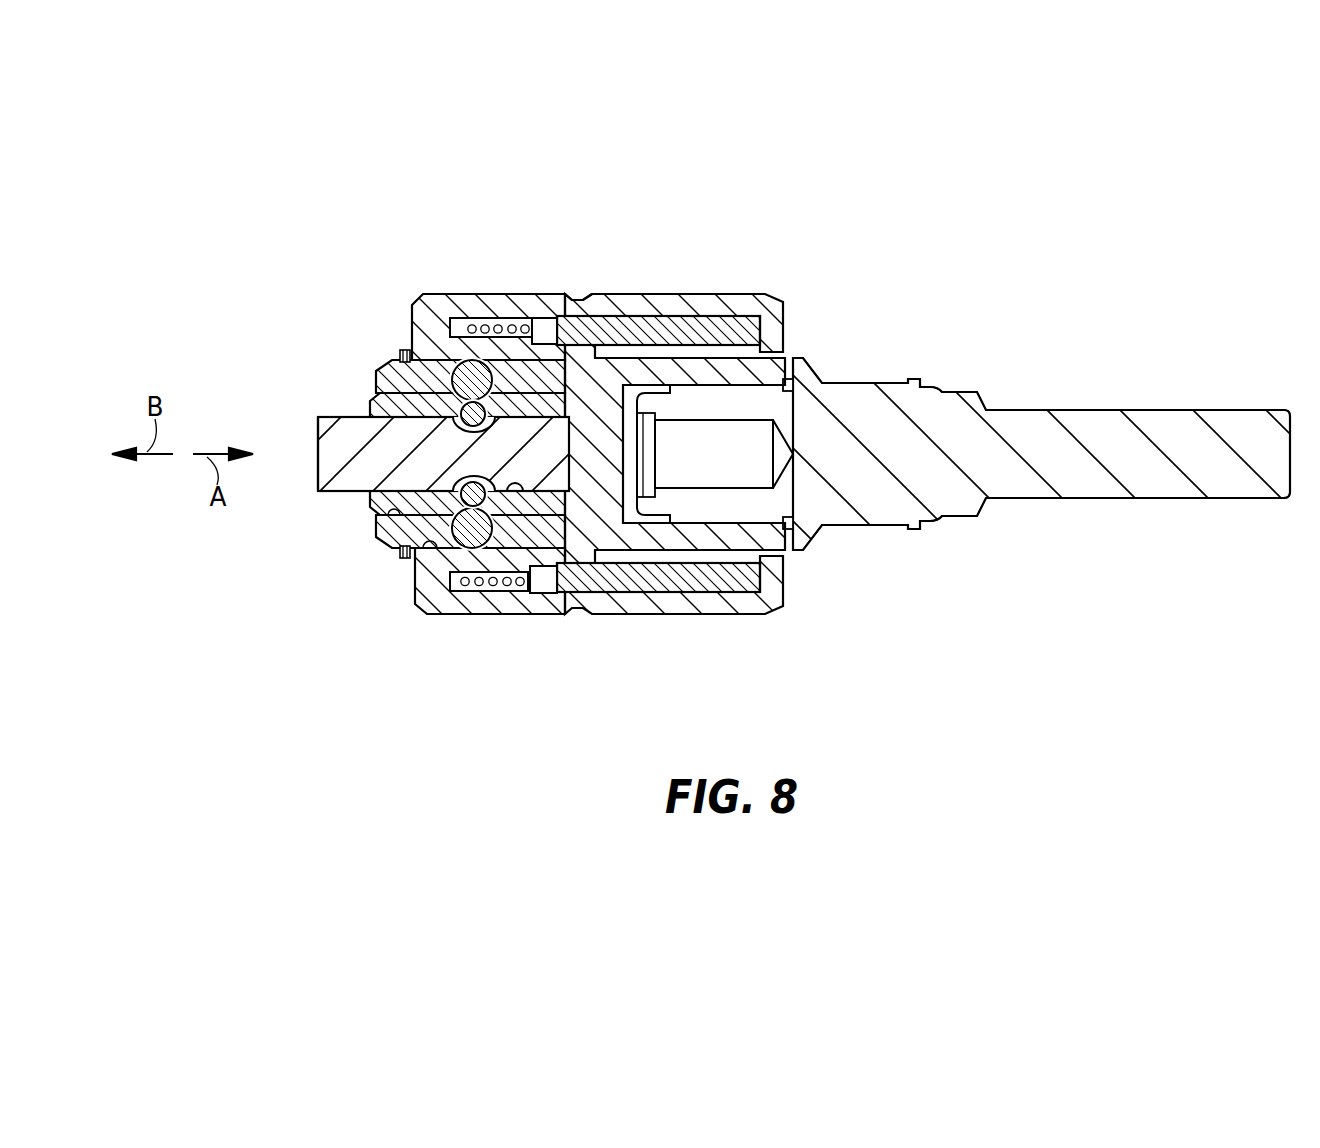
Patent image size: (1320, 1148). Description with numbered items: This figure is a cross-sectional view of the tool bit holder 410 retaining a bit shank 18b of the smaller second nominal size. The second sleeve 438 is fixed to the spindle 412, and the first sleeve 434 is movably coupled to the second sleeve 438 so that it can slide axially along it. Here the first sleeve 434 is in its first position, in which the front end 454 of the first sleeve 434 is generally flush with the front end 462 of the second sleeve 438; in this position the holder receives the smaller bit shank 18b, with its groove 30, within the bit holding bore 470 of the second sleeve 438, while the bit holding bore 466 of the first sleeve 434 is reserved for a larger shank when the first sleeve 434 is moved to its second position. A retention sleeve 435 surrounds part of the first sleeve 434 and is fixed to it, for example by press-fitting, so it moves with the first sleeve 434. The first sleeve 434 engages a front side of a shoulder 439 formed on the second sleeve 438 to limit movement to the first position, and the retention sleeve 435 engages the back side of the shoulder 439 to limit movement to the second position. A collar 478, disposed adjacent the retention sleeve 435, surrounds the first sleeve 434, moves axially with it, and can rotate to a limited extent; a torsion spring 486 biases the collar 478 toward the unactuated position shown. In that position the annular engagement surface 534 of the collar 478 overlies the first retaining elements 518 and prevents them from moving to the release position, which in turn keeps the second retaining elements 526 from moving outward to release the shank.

The tool bit holder 410 is at (876, 252).
The spindle 412 is at (1002, 412).
The second sleeve 438 is at (596, 520).
The first sleeve 434 is at (683, 578).
The retention sleeve 435 is at (702, 293).
The shoulder 439 is at (583, 298).
The collar 478 is at (430, 294).
The spring 486 is at (508, 317).
The first retaining elements 518 is at (473, 360).
The second retaining elements 526 is at (470, 401).
The front end of the first sleeve 454 is at (377, 370).
The front end of the second sleeve 462 is at (370, 405).
The bit holding bore 466 is at (393, 540).
The annular engagement surface 534 is at (410, 558).
The groove 30 is at (462, 430).
The bit shank 18b is at (340, 485).
The bit holding bore 470 is at (512, 491).